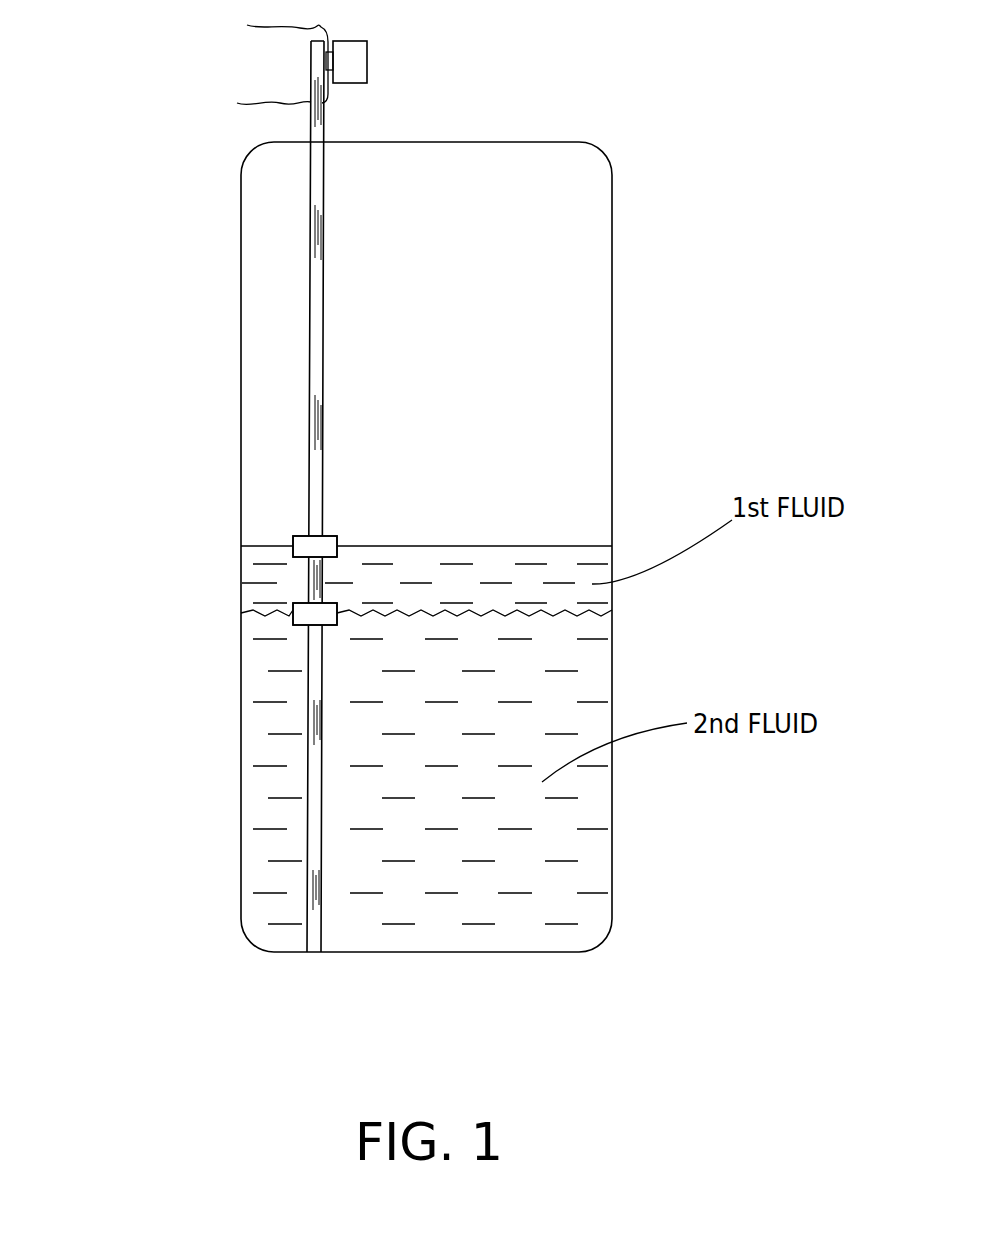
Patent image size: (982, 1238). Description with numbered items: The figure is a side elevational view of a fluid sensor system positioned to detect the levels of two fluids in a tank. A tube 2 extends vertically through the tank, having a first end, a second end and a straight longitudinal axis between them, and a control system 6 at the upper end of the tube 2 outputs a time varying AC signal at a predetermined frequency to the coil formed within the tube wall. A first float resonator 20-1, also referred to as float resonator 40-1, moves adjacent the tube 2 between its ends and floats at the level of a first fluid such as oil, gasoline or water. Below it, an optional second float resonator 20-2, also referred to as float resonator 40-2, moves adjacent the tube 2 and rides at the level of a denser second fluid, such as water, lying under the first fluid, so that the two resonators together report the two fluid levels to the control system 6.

The tube 2 is at (310, 330).
The control system 6 is at (367, 62).
The first float resonator 20-1 is at (300, 537).
The first float resonator 40-1 is at (137, 469).
The second float resonator 20-2 is at (297, 625).
The second float resonator 40-2 is at (110, 682).